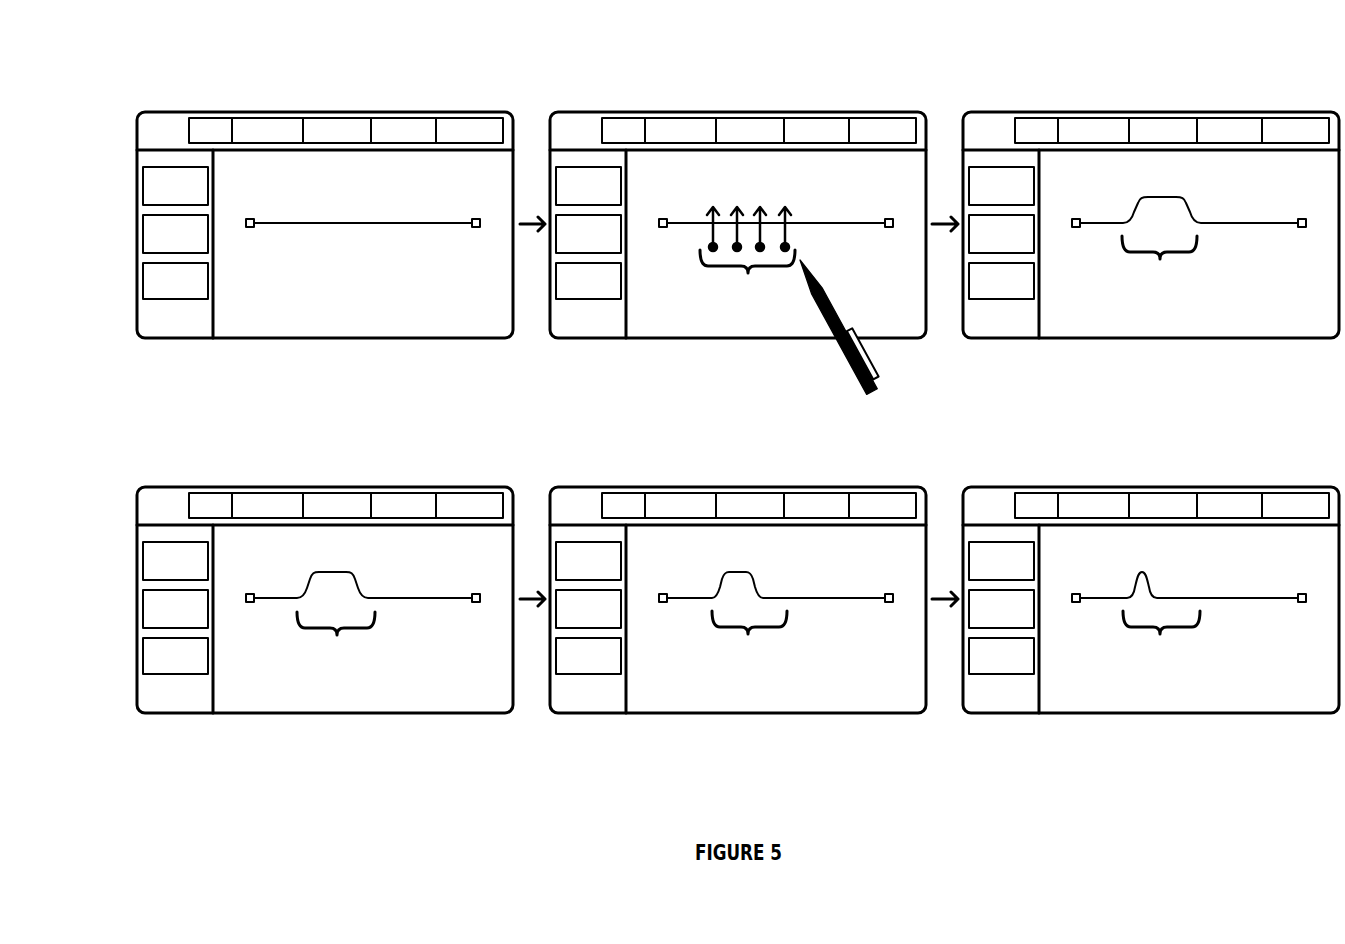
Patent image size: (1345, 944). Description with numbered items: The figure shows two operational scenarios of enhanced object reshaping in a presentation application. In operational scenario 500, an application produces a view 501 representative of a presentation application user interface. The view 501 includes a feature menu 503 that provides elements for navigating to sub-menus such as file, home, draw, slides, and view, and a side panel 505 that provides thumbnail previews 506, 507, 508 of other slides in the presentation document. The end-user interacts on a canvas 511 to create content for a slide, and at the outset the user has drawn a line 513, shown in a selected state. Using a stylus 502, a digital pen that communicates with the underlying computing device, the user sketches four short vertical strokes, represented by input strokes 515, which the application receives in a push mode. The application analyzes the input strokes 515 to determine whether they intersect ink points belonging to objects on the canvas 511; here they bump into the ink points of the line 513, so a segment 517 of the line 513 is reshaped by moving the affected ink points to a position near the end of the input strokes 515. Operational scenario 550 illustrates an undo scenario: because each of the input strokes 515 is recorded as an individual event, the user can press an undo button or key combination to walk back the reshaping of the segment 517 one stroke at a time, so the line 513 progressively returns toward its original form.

The operational scenario 500 is at (127, 65).
The operational scenario 550 is at (127, 440).
The view 501 is at (291, 339).
The stylus 502 is at (855, 372).
The feature menu 503 is at (740, 318).
The side panel 505 is at (592, 431).
The thumbnail preview 506 is at (588, 373).
The thumbnail preview 507 is at (588, 421).
The thumbnail preview 508 is at (588, 468).
The canvas 511 is at (698, 506).
The line 513 is at (400, 225).
The input strokes 515 is at (747, 254).
The segment 517 is at (748, 448).